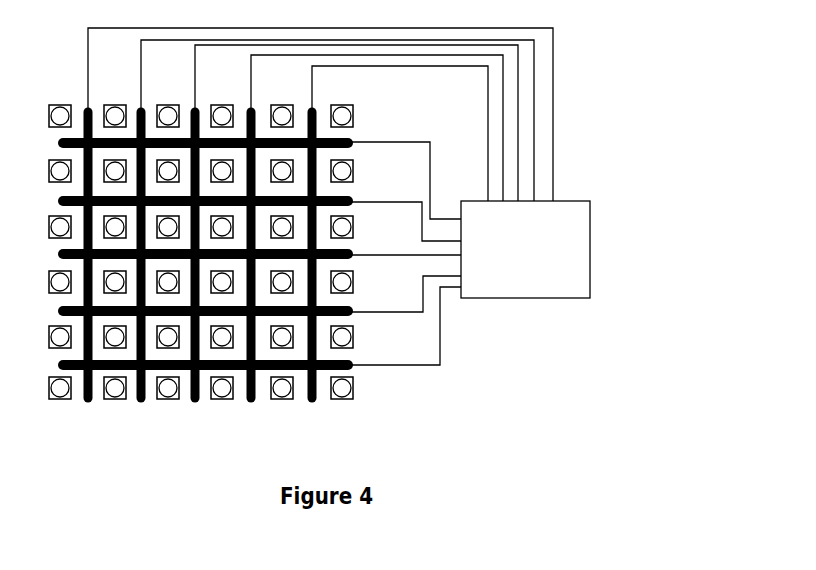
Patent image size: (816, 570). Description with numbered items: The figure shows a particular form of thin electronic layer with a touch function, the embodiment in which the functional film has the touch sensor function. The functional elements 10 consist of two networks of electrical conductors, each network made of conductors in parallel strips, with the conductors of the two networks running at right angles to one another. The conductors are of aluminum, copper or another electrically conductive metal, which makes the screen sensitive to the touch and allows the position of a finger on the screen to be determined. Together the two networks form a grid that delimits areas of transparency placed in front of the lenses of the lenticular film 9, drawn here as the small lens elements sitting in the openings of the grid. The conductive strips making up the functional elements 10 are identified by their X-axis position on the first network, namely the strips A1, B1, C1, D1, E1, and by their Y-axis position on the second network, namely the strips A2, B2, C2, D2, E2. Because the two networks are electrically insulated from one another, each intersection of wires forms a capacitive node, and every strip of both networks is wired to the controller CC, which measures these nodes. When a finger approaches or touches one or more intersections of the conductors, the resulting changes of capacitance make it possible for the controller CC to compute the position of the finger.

The lenticular film 9 is at (342, 116).
The functional elements 10 is at (336, 138).
The conductive strip at X-axis position A1 is at (243, 160).
The conductive strip at X-axis position B1 is at (243, 216).
The conductive strip at X-axis position C1 is at (243, 255).
The conductive strip at X-axis position D1 is at (243, 298).
The conductive strip at X-axis position E1 is at (243, 331).
The conductive strip at Y-axis position A2 is at (314, 226).
The conductive strip at Y-axis position B2 is at (331, 232).
The conductive strip at Y-axis position C2 is at (351, 235).
The conductive strip at Y-axis position D2 is at (371, 240).
The conductive strip at Y-axis position E2 is at (395, 245).
The controller CC is at (525, 249).